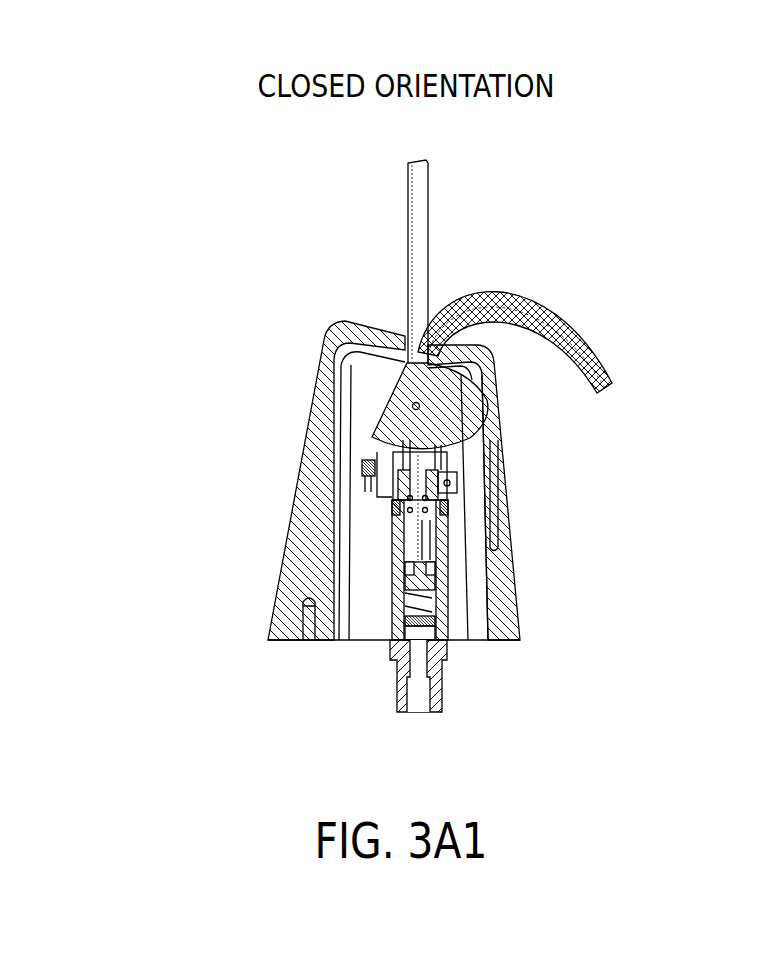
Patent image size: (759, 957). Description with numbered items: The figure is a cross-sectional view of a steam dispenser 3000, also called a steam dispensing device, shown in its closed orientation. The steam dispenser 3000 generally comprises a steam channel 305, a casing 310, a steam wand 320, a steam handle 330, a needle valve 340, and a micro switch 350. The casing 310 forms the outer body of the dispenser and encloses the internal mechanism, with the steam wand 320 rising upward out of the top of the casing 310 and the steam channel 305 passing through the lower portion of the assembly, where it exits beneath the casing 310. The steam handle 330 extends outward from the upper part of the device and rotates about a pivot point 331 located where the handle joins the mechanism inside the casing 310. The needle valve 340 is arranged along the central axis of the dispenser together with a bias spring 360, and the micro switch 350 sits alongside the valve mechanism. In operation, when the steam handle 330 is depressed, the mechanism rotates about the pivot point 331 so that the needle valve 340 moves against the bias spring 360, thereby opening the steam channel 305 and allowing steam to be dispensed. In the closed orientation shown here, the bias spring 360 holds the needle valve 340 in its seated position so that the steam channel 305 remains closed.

The steam dispenser 3000 is at (293, 215).
The steam channel 305 is at (428, 713).
The casing 310 is at (283, 569).
The steam wand 320 is at (430, 178).
The steam handle 330 is at (575, 337).
The pivot point 331 is at (395, 378).
The needle valve 340 is at (427, 548).
The micro switch 350 is at (359, 455).
The bias spring 360 is at (433, 603).